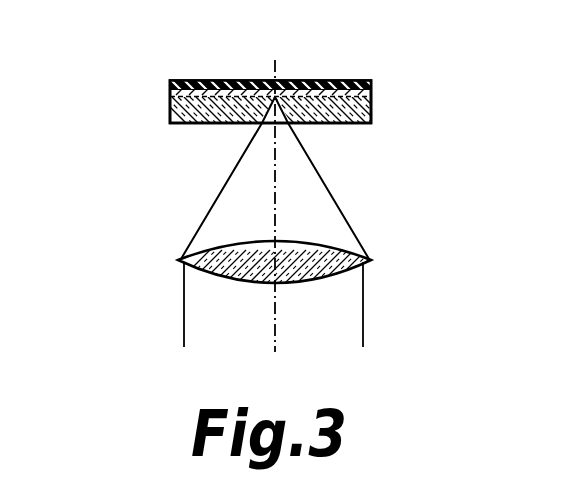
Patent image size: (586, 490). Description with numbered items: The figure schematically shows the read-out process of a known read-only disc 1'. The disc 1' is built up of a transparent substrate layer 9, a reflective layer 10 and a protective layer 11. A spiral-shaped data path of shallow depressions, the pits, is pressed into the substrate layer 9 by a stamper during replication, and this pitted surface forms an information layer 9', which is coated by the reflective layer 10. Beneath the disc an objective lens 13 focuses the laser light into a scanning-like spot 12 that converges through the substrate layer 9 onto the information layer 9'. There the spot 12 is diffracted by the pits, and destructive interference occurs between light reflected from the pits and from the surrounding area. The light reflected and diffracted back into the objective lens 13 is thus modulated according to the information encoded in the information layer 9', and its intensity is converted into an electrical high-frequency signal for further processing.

The read-only disc 1' is at (322, 105).
The transparent substrate layer 9 is at (271, 139).
The information layer 9' is at (270, 55).
The reflective layer 10 is at (270, 56).
The protective layer 11 is at (184, 80).
The scanning-like spot 12 is at (206, 222).
The objective lens 13 is at (314, 284).